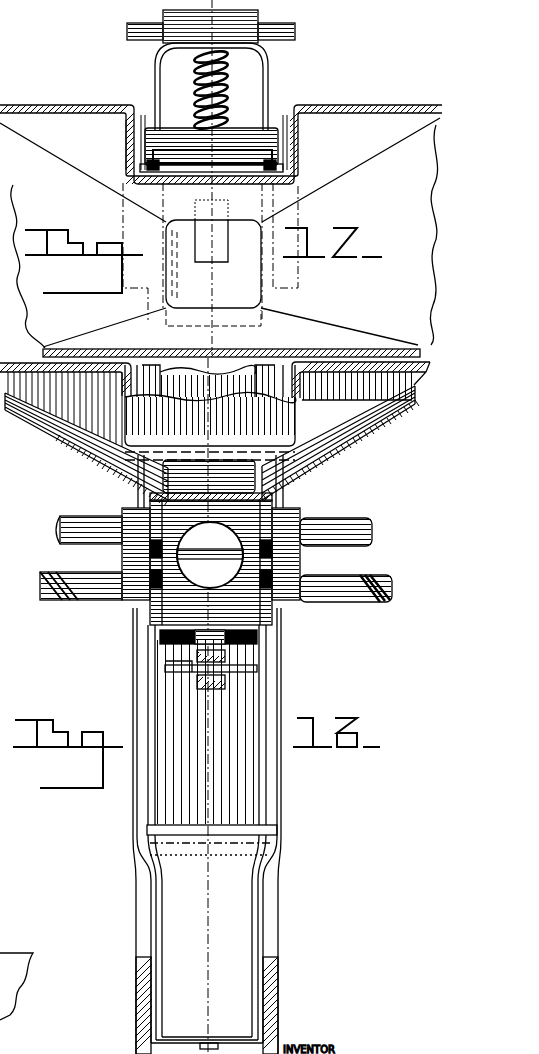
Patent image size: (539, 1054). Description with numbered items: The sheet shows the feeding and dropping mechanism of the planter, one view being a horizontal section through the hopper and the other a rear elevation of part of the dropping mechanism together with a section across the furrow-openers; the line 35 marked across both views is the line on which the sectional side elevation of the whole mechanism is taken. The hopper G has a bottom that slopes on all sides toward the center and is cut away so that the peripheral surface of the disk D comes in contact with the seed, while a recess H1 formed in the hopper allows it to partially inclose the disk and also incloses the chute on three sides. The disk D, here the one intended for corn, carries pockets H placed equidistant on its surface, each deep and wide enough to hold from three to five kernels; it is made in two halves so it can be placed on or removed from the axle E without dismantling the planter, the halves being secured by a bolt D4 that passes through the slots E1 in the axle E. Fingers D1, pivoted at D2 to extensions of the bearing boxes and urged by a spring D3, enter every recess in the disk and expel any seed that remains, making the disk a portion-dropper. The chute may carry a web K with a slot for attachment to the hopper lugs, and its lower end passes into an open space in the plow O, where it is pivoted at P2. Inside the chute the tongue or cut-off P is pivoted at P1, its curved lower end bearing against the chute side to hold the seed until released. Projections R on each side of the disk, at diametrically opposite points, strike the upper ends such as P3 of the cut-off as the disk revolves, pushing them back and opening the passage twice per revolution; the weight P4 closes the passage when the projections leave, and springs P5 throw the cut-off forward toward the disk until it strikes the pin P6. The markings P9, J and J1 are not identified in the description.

In FIG. 12, the section line 35 is at (215, 7).
In FIG. 12, the cross bar P9 is at (298, 36).
In FIG. 12, the dome / cylinder casing J is at (260, 110).
In FIG. 13, the dome / cylinder casing J is at (138, 498).
In FIG. 12, the liner J1 is at (143, 112).
In FIG. 12, the spring P5 is at (199, 90).
In FIG. 12, the recess H1 is at (131, 112).
In FIG. 13, the recess H1 is at (330, 400).
In FIG. 12, the end of cut-off P3 is at (182, 138).
In FIG. 13, the end of cut-off P3 is at (284, 780).
In FIG. 12, the pin P6 is at (211, 172).
In FIG. 12, the projections R is at (211, 170).
In FIG. 13, the projections R is at (62, 540).
In FIG. 12, the weight P4 is at (126, 157).
In FIG. 12, the hopper G is at (128, 118).
In FIG. 13, the hopper G is at (100, 457).
In FIG. 12, the disk D is at (280, 330).
In FIG. 13, the disk D is at (124, 605).
In FIG. 12, the pockets H is at (211, 231).
In FIG. 13, the pockets H is at (298, 664).
In FIG. 12, the web K is at (150, 350).
In FIG. 13, the bolt D4 is at (137, 558).
In FIG. 13, the spring D3 is at (48, 580).
In FIG. 13, the slots E1 is at (370, 546).
In FIG. 13, the axle E is at (388, 582).
In FIG. 13, the finger pivot D2 is at (165, 667).
In FIG. 13, the fingers D1 is at (200, 690).
In FIG. 13, the pivot P2 is at (137, 786).
In FIG. 13, the cut-off pivot P1 is at (284, 848).
In FIG. 13, the tongue or cut-off P is at (250, 964).
In FIG. 13, the plow O is at (284, 1034).